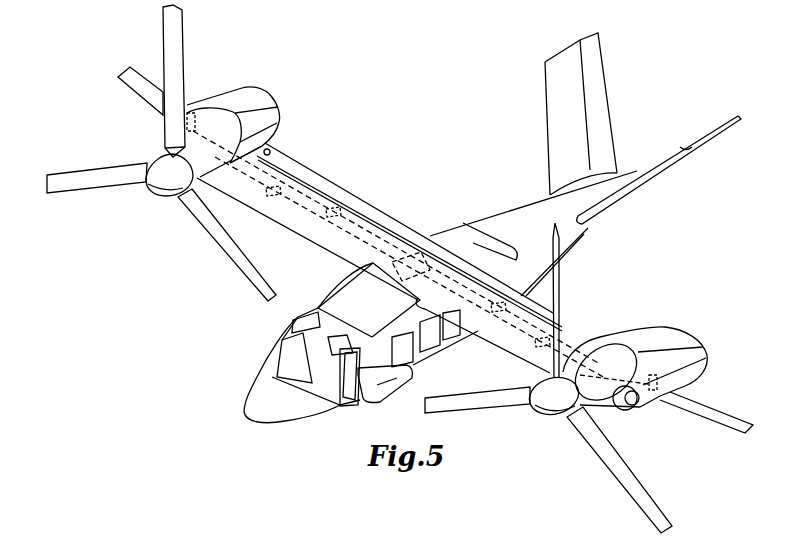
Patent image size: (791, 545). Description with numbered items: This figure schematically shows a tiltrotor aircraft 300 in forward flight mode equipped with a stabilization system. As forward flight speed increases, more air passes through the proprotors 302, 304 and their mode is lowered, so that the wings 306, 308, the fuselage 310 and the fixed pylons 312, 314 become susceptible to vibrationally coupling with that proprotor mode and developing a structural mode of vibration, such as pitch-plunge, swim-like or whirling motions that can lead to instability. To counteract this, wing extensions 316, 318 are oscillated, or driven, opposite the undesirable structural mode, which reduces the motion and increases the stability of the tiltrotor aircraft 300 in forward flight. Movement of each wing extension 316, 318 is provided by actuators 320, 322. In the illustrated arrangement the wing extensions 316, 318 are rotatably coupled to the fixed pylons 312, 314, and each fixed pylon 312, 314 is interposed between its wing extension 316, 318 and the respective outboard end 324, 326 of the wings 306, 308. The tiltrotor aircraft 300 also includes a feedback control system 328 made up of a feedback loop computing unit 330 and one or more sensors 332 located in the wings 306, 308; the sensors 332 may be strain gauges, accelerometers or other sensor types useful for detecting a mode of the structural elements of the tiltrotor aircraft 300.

The tiltrotor aircraft 300 is at (449, 152).
The proprotor 302 is at (540, 408).
The proprotor 304 is at (153, 187).
The wing 306 is at (496, 330).
The wing 308 is at (302, 215).
The fuselage 310 is at (508, 216).
The fixed pylon 312 is at (656, 333).
The fixed pylon 314 is at (246, 96).
The wing extension 316 is at (722, 406).
The wing extension 318 is at (134, 78).
The actuator 320 is at (657, 372).
The actuator 322 is at (193, 112).
The outboard end 324 is at (580, 357).
The outboard end 326 is at (271, 152).
The feedback control system 328 is at (402, 254).
The feedback loop computing unit 330 is at (414, 253).
The sensors 332 is at (268, 200).